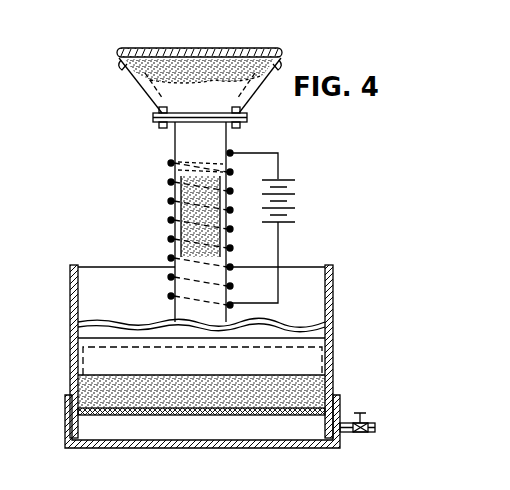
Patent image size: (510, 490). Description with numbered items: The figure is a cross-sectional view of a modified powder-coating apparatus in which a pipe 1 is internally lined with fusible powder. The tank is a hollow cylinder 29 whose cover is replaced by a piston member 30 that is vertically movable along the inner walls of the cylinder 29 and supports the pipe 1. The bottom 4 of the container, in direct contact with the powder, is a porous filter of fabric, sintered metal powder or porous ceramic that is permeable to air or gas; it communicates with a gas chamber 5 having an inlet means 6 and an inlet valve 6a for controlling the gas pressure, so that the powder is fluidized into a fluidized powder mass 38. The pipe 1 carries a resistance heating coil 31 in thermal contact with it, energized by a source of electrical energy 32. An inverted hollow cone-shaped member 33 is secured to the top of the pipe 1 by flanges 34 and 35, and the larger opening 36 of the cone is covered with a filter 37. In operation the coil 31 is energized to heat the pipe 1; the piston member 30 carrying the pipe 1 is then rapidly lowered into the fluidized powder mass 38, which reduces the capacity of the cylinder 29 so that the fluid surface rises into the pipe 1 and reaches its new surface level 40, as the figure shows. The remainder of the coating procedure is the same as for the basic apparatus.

The pipe 1 is at (175, 209).
The bottom 4 is at (98, 415).
The gas chamber 5 is at (177, 443).
The inlet means 6 is at (370, 427).
The inlet valve 6a is at (360, 432).
The hollow cylinder 29 is at (333, 271).
The piston member 30 is at (100, 348).
The resistance heating coil 31 is at (171, 181).
The source of electrical energy 32 is at (295, 196).
The inverted hollow cone-shaped member 33 is at (157, 92).
The flange 34 is at (246, 113).
The flange 35 is at (246, 119).
The larger opening 36 is at (189, 59).
The filter 37 is at (167, 49).
The fluidized powder mass 38 is at (93, 387).
The new surface level 40 is at (214, 78).